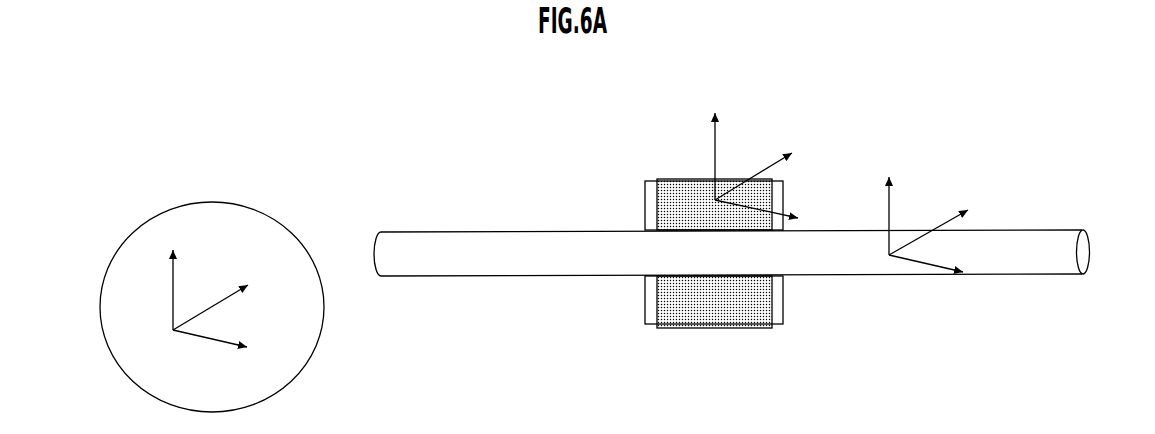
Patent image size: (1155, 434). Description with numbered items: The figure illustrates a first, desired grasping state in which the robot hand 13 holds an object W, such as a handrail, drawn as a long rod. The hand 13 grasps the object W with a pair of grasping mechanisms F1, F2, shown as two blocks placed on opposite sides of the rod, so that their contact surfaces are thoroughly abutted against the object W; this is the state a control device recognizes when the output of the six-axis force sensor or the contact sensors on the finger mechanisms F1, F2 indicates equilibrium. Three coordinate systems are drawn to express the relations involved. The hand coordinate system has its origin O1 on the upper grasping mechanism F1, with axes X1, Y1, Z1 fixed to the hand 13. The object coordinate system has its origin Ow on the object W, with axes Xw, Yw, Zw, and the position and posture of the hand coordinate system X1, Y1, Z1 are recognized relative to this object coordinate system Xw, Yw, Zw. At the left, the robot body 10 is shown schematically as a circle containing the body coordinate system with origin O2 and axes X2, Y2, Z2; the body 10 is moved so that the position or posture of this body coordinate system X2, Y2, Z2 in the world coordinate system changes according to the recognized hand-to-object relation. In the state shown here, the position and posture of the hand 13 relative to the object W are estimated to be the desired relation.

The robot body 10 is at (162, 212).
The robot hand 13 is at (636, 195).
The grasping mechanism F1 is at (685, 182).
The grasping mechanism F2 is at (675, 330).
The object W is at (1063, 237).
The origin of hand coordinate system O1 is at (698, 210).
The X axis of hand coordinate system X1 is at (766, 204).
The Y axis of hand coordinate system Y1 is at (753, 164).
The Z axis of hand coordinate system Z1 is at (727, 150).
The origin of body coordinate system O2 is at (161, 342).
The X axis of body coordinate system X2 is at (217, 356).
The Y axis of body coordinate system Y2 is at (223, 307).
The Z axis of body coordinate system Z2 is at (186, 282).
The origin of object coordinate system Ow is at (868, 257).
The X axis of object coordinate system Xw is at (933, 280).
The Y axis of object coordinate system Yw is at (928, 220).
The Z axis of object coordinate system Zw is at (904, 206).